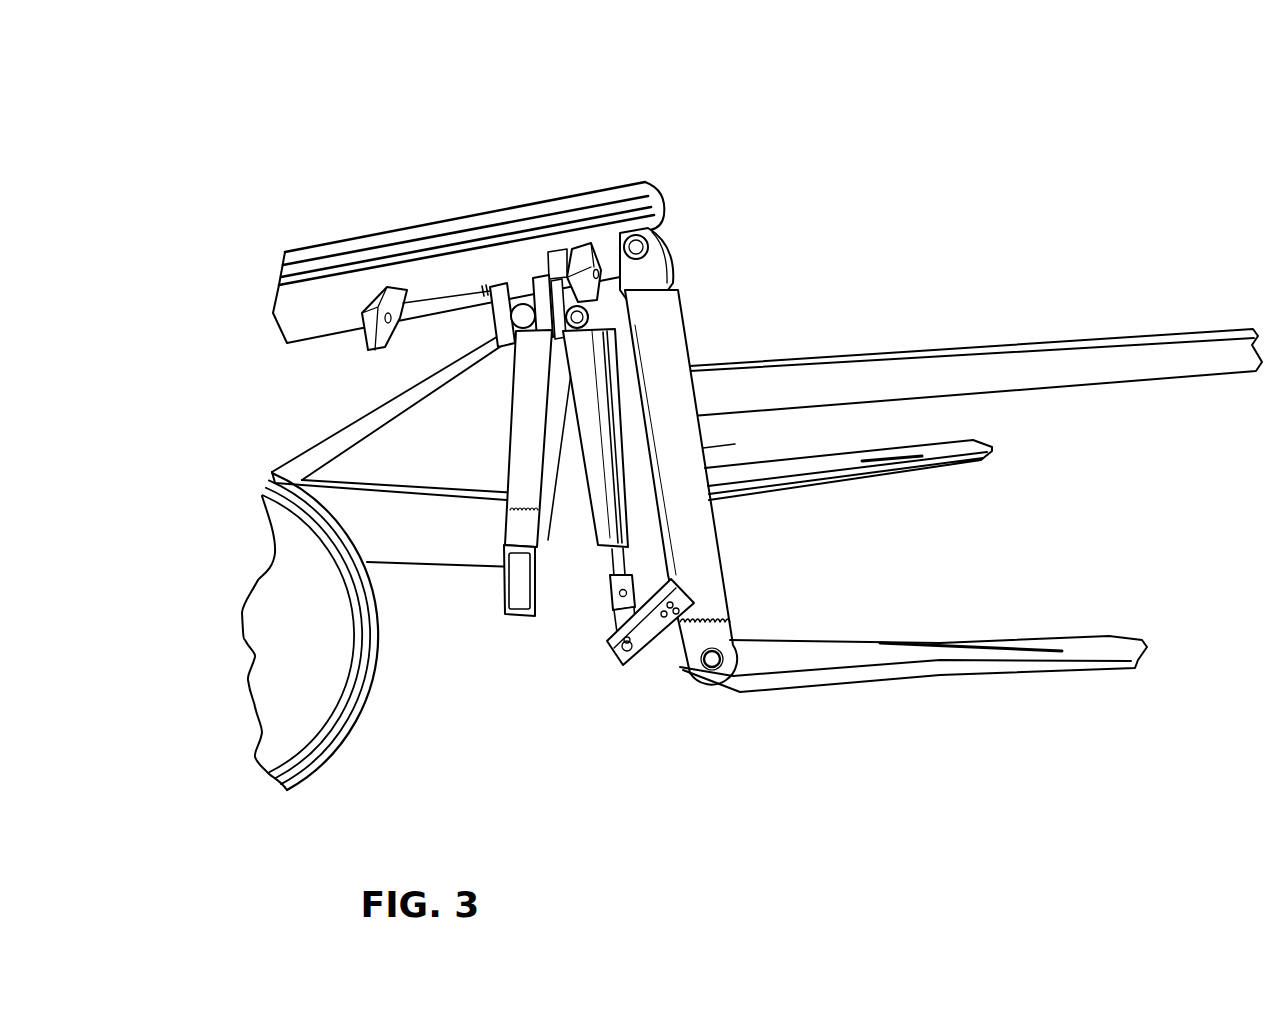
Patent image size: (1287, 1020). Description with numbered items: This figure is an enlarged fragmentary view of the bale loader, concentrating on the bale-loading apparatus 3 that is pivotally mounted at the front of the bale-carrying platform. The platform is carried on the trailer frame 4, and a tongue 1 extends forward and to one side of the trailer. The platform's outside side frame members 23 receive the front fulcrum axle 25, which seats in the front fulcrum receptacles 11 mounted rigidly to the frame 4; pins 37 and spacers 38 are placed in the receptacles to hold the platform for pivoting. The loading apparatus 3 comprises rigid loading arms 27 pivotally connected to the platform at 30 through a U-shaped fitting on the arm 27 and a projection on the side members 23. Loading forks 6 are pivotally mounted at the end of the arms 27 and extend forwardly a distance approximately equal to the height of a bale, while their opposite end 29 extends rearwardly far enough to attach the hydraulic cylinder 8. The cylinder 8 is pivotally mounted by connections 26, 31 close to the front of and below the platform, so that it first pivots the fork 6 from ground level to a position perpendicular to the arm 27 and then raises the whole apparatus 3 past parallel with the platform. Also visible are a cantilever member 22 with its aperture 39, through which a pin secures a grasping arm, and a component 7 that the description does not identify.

The tongue 1 is at (1107, 335).
The bale-loading apparatus 3 is at (722, 300).
The trailer frame 4 is at (460, 575).
The loading fork 6 is at (957, 465).
The wheel 7 is at (343, 755).
The hydraulic cylinder 8 is at (586, 554).
The front fulcrum receptacle 11 is at (511, 262).
The cantilever member 22 is at (387, 293).
The outside side frame member 23 is at (302, 300).
The front fulcrum axle 25 is at (510, 347).
The loader pivot connection 26 is at (657, 288).
The loading arm 27 is at (703, 448).
The opposite end of fork 29 is at (662, 665).
The arm pivot 30 is at (660, 237).
The cylinder mounting connection 31 is at (615, 672).
The pin 37 is at (492, 322).
The spacer 38 is at (548, 247).
The aperture 39 is at (389, 290).